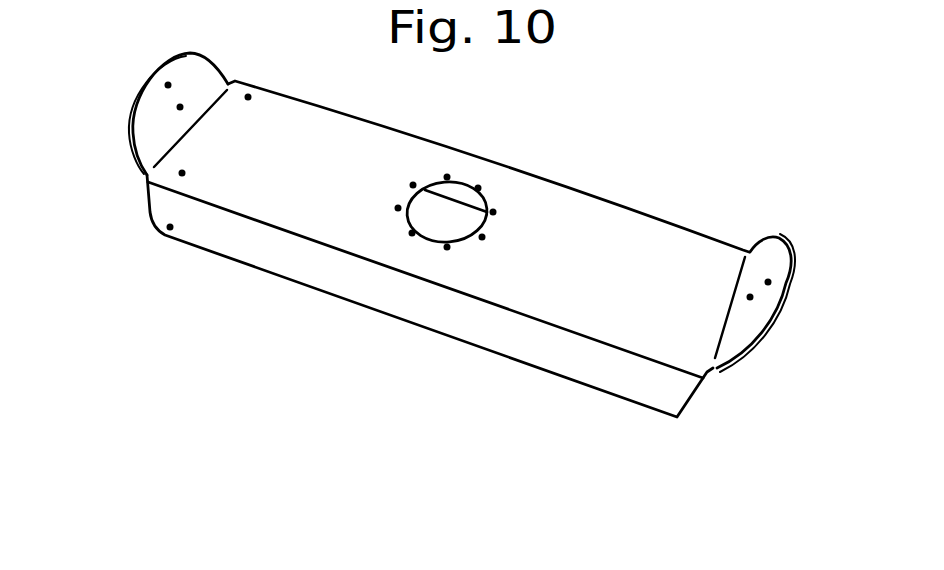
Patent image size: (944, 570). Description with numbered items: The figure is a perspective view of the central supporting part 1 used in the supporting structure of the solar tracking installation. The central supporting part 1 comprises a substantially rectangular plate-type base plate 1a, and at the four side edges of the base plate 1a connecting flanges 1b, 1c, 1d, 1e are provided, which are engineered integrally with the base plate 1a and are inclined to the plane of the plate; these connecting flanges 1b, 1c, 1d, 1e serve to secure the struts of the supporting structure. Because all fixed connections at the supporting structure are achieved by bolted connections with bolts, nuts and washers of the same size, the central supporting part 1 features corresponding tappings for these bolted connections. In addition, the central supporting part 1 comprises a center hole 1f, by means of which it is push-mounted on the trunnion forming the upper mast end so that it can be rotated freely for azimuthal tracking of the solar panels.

The central supporting part 1 is at (373, 322).
The base plate 1a is at (583, 292).
The connecting flange 1b is at (413, 300).
The connecting flange 1c is at (663, 213).
The connecting flange 1d is at (150, 102).
The connecting flange 1e is at (742, 317).
The center hole 1f is at (410, 228).